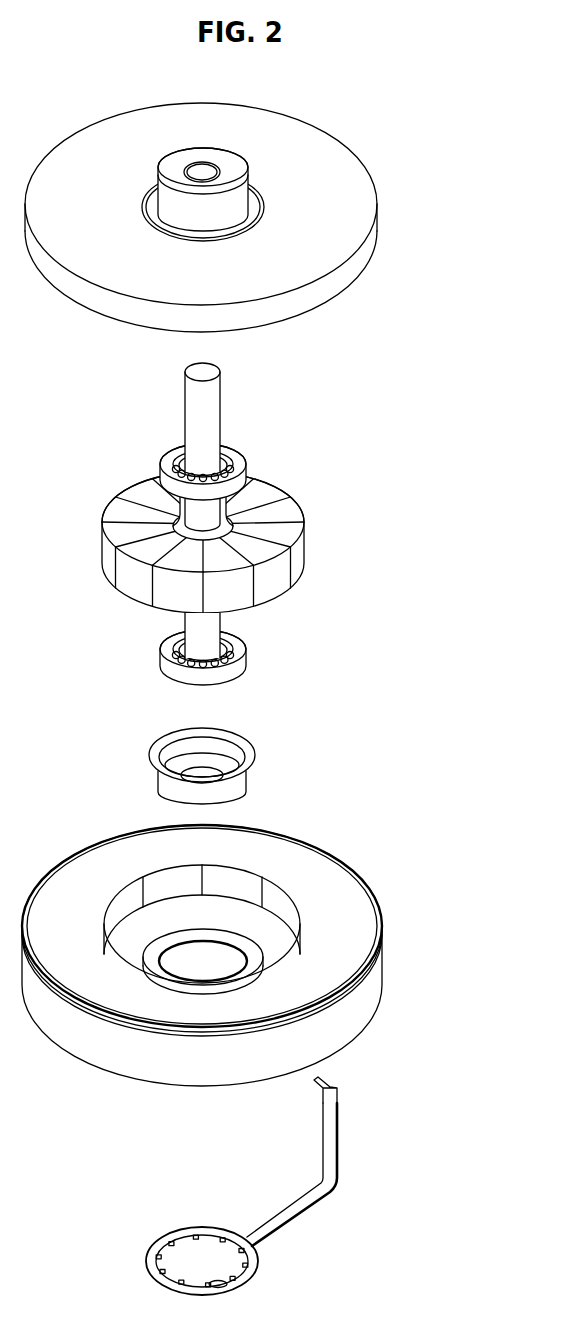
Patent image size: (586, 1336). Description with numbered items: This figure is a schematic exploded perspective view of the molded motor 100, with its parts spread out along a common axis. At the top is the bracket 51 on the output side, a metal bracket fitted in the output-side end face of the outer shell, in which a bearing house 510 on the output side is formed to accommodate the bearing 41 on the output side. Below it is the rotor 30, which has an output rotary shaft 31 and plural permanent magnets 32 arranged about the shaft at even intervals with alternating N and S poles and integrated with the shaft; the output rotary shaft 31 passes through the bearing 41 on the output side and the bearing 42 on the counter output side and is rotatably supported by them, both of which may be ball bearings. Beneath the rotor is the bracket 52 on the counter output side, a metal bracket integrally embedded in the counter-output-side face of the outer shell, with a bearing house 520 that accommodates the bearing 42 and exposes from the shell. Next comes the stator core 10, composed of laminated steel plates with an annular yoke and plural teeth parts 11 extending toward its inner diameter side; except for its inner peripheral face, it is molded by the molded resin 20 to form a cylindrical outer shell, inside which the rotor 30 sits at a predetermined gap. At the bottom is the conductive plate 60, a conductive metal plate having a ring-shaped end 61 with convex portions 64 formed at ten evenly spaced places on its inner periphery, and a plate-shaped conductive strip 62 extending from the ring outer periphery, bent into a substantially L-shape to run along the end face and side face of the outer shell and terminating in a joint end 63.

The molded motor 100 is at (451, 162).
The bracket on the output side 51 is at (333, 287).
The bearing house on the output side 510 is at (287, 158).
The output rotary shaft 31 is at (213, 395).
The bearing on the output side 41 is at (262, 456).
The rotor 30 is at (229, 540).
The permanent magnets 32 is at (123, 582).
The bearing on the counter output side 42 is at (262, 665).
The bracket on the counter output side 52 is at (176, 761).
The bearing house 520 is at (133, 768).
The stator core 10 is at (202, 895).
The teeth parts 11 is at (122, 903).
The molded resin 20 is at (207, 941).
The conductive plate 60 is at (279, 1174).
The ring-shaped end 61 is at (180, 1228).
The conductive strip 62 is at (295, 1205).
The joint end 63 is at (336, 1089).
The convex portions 64 is at (228, 1288).